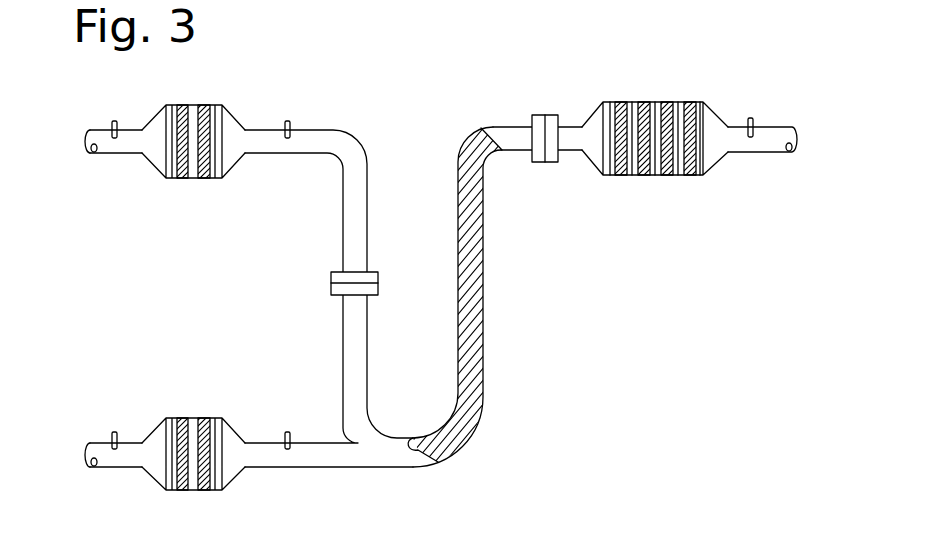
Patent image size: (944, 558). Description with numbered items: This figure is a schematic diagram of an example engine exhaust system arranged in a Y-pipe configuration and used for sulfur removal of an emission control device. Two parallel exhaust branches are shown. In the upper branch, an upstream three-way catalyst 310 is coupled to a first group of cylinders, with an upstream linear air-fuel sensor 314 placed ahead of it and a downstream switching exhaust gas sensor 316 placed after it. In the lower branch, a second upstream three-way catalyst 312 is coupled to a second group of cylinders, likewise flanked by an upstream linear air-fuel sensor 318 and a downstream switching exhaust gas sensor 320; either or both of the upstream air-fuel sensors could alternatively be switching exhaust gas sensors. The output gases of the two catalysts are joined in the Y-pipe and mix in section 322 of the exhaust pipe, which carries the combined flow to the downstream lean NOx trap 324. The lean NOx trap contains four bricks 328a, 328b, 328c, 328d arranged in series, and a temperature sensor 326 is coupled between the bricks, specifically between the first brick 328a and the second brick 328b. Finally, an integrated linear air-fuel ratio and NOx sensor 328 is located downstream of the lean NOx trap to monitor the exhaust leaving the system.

The upstream three-way catalyst 310 is at (190, 104).
The upstream three-way catalyst 312 is at (190, 417).
The upstream linear air-fuel sensor 314 is at (114, 121).
The downstream switching exhaust gas sensor 316 is at (287, 121).
The upstream linear air-fuel sensor 318 is at (114, 432).
The downstream switching exhaust gas sensor 320 is at (287, 432).
The section of the exhaust pipe 322 is at (485, 297).
The downstream lean NOx trap 324 is at (720, 163).
The temperature sensor 326 is at (633, 177).
The integrated linear air-fuel ratio and NOx sensor 328 is at (752, 118).
The brick 328a is at (619, 102).
The brick 328b is at (642, 102).
The brick 328c is at (665, 102).
The brick 328d is at (688, 102).